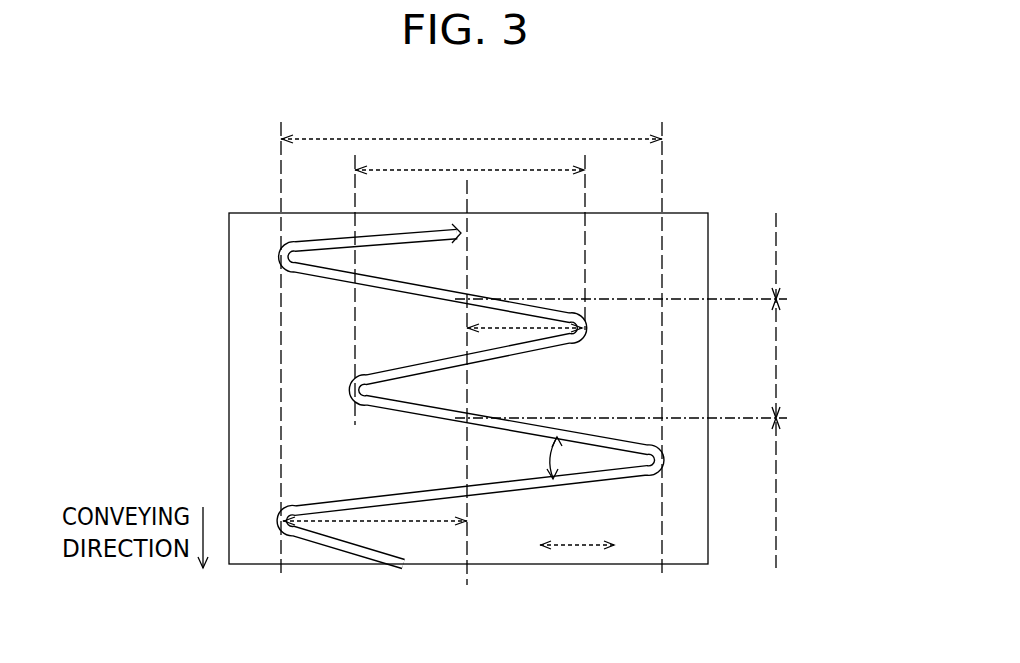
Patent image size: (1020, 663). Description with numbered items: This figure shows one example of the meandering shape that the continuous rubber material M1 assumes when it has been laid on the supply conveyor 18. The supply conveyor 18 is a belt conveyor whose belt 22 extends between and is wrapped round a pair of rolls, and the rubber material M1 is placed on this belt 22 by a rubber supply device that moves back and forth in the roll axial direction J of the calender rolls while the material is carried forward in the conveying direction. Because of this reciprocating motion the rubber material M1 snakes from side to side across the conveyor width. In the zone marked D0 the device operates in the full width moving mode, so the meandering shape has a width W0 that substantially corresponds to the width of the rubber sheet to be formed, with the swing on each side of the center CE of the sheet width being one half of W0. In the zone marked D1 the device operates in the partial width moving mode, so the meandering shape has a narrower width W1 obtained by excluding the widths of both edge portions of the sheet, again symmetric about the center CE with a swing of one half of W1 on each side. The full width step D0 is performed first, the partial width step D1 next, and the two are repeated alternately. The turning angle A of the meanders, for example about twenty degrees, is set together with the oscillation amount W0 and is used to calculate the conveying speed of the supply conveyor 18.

The supply conveyor 18 is at (224, 329).
The belt 22 is at (250, 287).
The continuous rubber material M1 is at (345, 497).
The center of the width of the rubber sheet CE is at (470, 570).
The width of meandering shape in full width moving mode W0 is at (425, 140).
The width of meandering shape in partial width moving mode W1 is at (545, 168).
The full width moving mode zone D0 is at (637, 390).
The partial width moving mode zone D1 is at (797, 358).
The turning angle A is at (542, 458).
The roll axial direction J is at (577, 531).